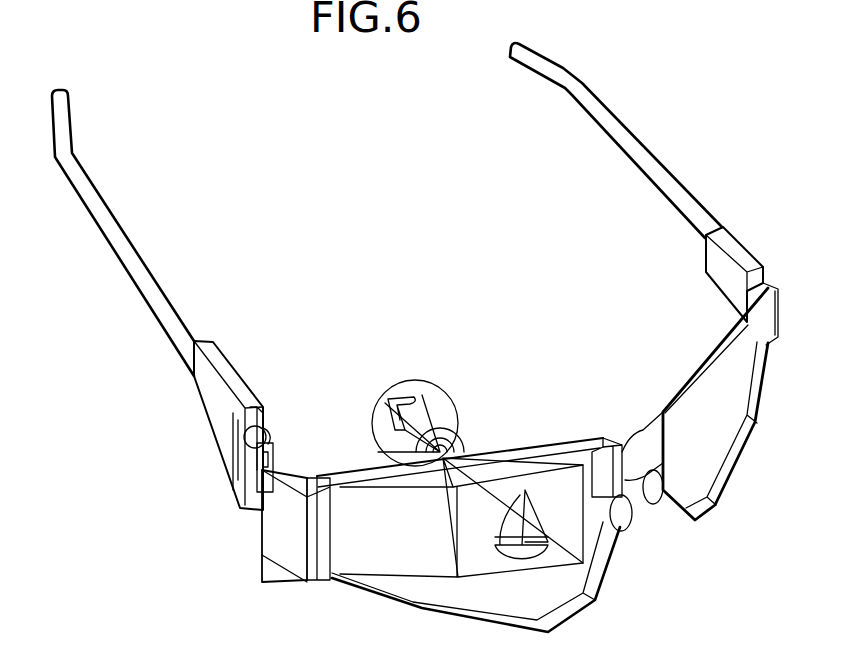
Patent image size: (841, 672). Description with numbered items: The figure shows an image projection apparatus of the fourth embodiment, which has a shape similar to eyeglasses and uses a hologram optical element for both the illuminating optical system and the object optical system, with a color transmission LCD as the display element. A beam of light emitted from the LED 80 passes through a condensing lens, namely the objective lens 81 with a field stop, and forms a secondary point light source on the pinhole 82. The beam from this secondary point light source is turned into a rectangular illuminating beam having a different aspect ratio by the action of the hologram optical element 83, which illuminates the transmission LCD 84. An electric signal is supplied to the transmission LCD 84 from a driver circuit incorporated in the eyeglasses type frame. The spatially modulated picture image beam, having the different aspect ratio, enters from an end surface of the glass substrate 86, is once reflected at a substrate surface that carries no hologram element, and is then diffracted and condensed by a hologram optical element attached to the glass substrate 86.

The LED 80 is at (257, 408).
The objective lens 81 is at (265, 437).
The pinhole 82 is at (273, 445).
The hologram optical element 83 is at (286, 578).
The transmission LCD 84 is at (310, 477).
The glass substrate 86 is at (425, 590).